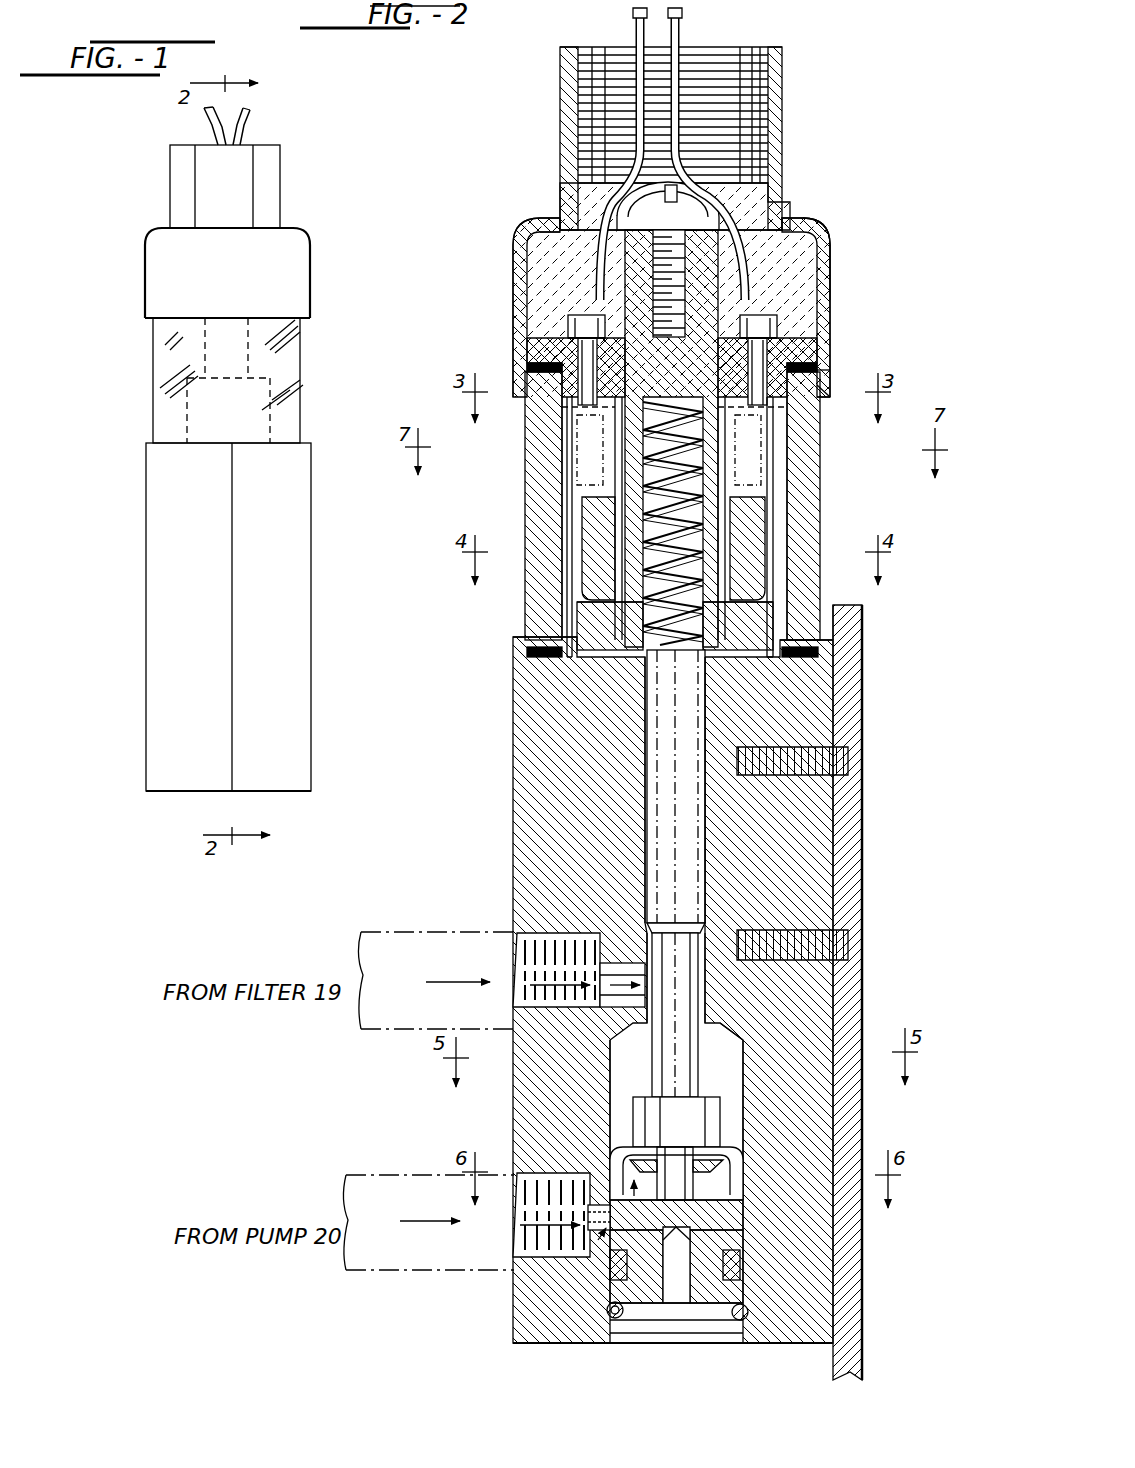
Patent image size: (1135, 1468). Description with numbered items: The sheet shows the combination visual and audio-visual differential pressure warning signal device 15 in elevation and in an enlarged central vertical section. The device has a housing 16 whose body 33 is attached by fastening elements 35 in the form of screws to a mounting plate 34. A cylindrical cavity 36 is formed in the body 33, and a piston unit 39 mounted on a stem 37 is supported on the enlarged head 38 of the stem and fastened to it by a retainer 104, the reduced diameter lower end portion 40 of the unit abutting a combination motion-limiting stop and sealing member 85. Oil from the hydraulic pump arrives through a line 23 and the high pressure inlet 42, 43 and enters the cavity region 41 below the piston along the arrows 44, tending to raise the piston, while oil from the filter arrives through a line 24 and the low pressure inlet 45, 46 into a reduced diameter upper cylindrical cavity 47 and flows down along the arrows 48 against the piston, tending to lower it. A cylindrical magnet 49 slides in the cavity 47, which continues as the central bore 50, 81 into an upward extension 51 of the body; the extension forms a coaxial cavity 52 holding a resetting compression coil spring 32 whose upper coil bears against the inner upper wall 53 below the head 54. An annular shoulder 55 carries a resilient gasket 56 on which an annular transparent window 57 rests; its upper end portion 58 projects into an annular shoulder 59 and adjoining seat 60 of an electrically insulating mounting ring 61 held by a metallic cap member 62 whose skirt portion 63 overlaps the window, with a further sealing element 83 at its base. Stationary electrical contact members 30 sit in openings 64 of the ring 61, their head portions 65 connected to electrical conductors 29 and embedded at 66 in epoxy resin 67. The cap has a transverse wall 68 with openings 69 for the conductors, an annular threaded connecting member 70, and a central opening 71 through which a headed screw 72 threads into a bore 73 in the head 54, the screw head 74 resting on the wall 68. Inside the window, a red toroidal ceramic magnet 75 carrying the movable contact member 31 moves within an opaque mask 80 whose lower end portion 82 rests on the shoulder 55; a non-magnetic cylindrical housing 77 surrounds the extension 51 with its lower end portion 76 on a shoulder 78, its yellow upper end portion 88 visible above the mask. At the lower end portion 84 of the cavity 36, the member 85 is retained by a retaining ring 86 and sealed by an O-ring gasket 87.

In FIG. 1, the combination visual and audio-visual differential pressure warning signal device 15 is at (312, 262).
In FIG. 2, the combination visual and audio-visual differential pressure warning signal device 15 is at (833, 256).
In FIG. 1, the housing 16 is at (285, 582).
In FIG. 2, the housing 16 is at (866, 742).
In FIG. 2, the line 23 is at (390, 1272).
In FIG. 2, the line 24 is at (382, 1032).
In FIG. 1, the electrical conductors 29 is at (240, 140).
In FIG. 2, the electrical conductors 29 is at (660, 10).
In FIG. 2, the stationary electrical contact members 30 is at (820, 366).
In FIG. 2, the movable electrical contact member 31 is at (775, 420).
In FIG. 2, the resetting compression coil spring 32 is at (778, 642).
In FIG. 2, the body 33 is at (818, 843).
In FIG. 2, the mounting plate 34 is at (850, 1014).
In FIG. 2, the threads 35 is at (782, 660).
In FIG. 2, the cylindrical cavity 36 is at (735, 1082).
In FIG. 2, the stem 37 is at (692, 997).
In FIG. 2, the enlarged lower end portion or head 38 is at (706, 1122).
In FIG. 2, the piston unit 39 is at (742, 1188).
In FIG. 2, the reduced diameter lower end portion 40 is at (700, 1176).
In FIG. 2, the chamber 41 is at (638, 1015).
In FIG. 2, the high pressure inlet 42 is at (525, 1175).
In FIG. 2, the high pressure inlet 43 is at (596, 1222).
In FIG. 2, the arrows 44 is at (412, 1223).
In FIG. 2, the low pressure inlet 45 is at (540, 955).
In FIG. 2, the low pressure inlet 46 is at (612, 900).
In FIG. 2, the reduced diameter upper cylindrical cavity 47 is at (712, 930).
In FIG. 2, the arrows 48 is at (470, 985).
In FIG. 2, the cylindrical magnet 49 is at (690, 815).
In FIG. 2, the central bore 50 is at (708, 835).
In FIG. 2, the upward extension 51 is at (740, 466).
In FIG. 2, the coaxial cylindrical cavity 52 is at (600, 452).
In FIG. 2, the inner upper wall 53 is at (678, 395).
In FIG. 2, the top or head 54 is at (787, 290).
In FIG. 2, the annular shoulder 55 is at (530, 668).
In FIG. 2, the annular resilient gasket 56 is at (540, 662).
In FIG. 1, the annular transparent window 57 is at (300, 377).
In FIG. 2, the annular transparent window 57 is at (772, 602).
In FIG. 2, the upper end portion 58 is at (820, 397).
In FIG. 2, the annular shoulder 59 is at (562, 412).
In FIG. 2, the gasket 60 is at (590, 435).
In FIG. 2, the annular mounting member or ring 61 is at (825, 340).
In FIG. 1, the annular metallic cap member 62 is at (297, 294).
In FIG. 2, the annular metallic cap member 62 is at (518, 255).
In FIG. 2, the skirt portion 63 is at (826, 388).
In FIG. 2, the openings 64 is at (833, 371).
In FIG. 2, the head portion 65 is at (779, 330).
In FIG. 2, the embedded location 66 is at (800, 322).
In FIG. 2, the electrically insulating epoxy resin material 67 is at (803, 230).
In FIG. 2, the transverse wall 68 is at (555, 238).
In FIG. 2, the openings 69 is at (790, 212).
In FIG. 1, the annular threaded connecting member 70 is at (270, 188).
In FIG. 2, the annular threaded connecting member 70 is at (778, 94).
In FIG. 2, the centrally arranged opening 71 is at (600, 210).
In FIG. 2, the headed screw 72 is at (612, 290).
In FIG. 2, the internally threaded bore 73 is at (605, 262).
In FIG. 2, the head 74 is at (693, 205).
In FIG. 2, the toroidal ceramic visual warning signal magnet 75 is at (770, 448).
In FIG. 2, the lower end portion 76 is at (580, 630).
In FIG. 2, the non-magnetic cylindrical housing 77 is at (728, 562).
In FIG. 2, the shoulder 78 is at (790, 605).
In FIG. 2, the opaque housing or mask 80 is at (600, 598).
In FIG. 2, the central bore 81 is at (800, 628).
In FIG. 2, the lower end portion 82 is at (810, 680).
In FIG. 2, the seal ring 83 is at (530, 651).
In FIG. 2, the lower end portion 84 is at (610, 1296).
In FIG. 2, the combination motion-limiting stop and sealing member 85 is at (712, 1237).
In FIG. 2, the retaining ring 86 is at (748, 1310).
In FIG. 2, the O-ring gasket 87 is at (742, 1268).
In FIG. 2, the upper end portion 88 is at (605, 488).
In FIG. 2, the retainer 104 is at (648, 1187).